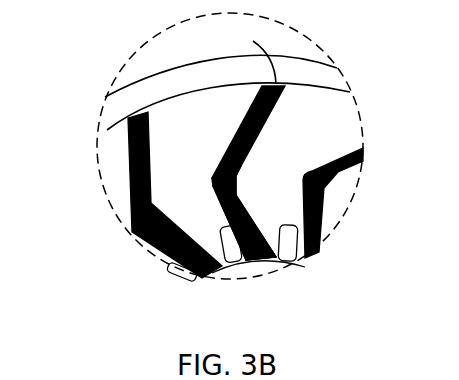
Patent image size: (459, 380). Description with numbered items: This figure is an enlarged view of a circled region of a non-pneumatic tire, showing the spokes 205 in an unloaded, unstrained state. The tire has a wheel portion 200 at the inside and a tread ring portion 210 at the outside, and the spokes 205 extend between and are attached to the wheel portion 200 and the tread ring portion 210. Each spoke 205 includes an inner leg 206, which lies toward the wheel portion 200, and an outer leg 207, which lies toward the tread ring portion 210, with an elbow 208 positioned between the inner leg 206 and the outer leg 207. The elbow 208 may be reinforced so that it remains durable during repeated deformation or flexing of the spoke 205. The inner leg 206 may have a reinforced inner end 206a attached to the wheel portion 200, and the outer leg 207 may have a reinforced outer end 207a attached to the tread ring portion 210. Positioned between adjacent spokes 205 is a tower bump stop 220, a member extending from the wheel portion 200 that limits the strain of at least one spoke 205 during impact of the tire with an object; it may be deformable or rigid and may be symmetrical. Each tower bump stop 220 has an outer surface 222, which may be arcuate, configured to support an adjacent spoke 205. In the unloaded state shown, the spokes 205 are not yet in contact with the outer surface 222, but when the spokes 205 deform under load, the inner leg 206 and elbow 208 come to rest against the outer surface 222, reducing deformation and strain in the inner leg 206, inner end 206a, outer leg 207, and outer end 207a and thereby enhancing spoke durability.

The wheel portion 200 is at (251, 271).
The spoke 205 is at (127, 163).
The inner leg 206 is at (254, 231).
The reinforced inner end 206a is at (266, 264).
The outer leg 207 is at (249, 125).
The reinforced outer end 207a is at (237, 56).
The elbow 208 is at (218, 172).
The tread ring portion 210 is at (327, 74).
The tower bump stop 220 is at (237, 262).
The outer surface 222 is at (222, 232).